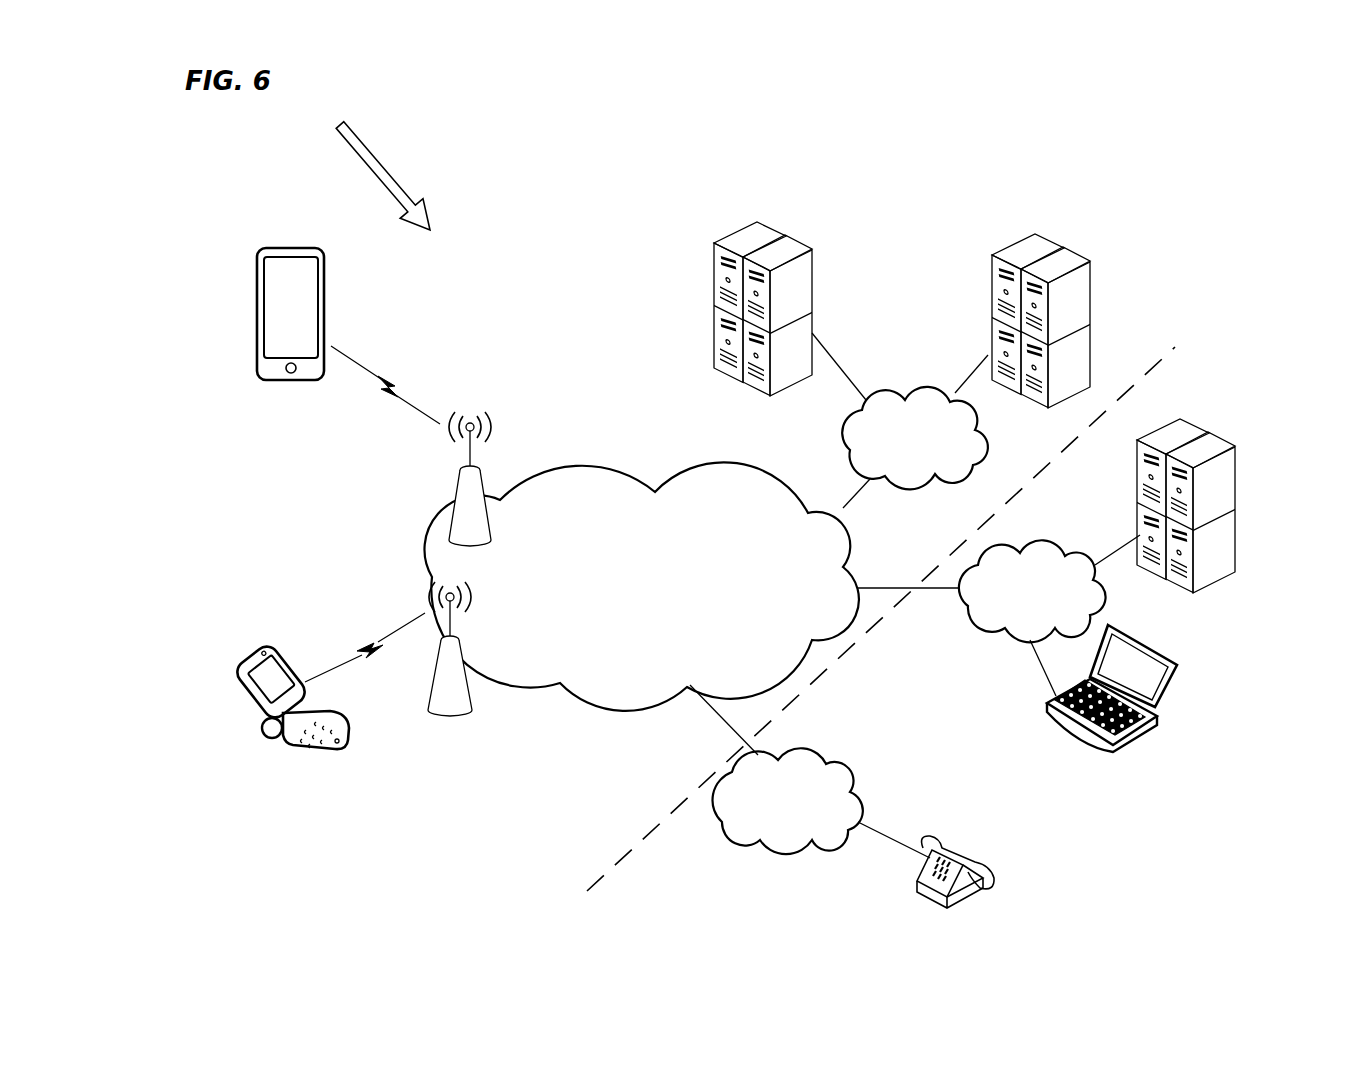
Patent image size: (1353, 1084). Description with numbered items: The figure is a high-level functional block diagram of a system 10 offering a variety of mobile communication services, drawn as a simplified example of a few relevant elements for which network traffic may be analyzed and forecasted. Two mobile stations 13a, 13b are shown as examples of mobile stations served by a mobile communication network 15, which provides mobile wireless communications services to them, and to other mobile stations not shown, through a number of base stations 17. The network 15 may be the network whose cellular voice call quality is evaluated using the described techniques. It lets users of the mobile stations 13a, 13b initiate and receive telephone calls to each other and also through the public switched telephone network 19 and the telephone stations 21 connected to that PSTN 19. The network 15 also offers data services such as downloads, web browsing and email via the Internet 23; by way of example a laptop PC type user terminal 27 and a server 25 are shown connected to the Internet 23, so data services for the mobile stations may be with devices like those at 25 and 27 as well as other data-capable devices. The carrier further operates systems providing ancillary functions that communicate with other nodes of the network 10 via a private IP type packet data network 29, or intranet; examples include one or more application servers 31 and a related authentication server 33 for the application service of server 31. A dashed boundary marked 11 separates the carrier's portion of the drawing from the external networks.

The system 10 is at (371, 168).
The carrier network boundary 11 is at (881, 619).
The mobile station 13a is at (240, 682).
The mobile station 13b is at (257, 293).
The mobile communication network 15 is at (541, 468).
The base station 17 is at (452, 498).
The public switched telephone network (PSTN) 19 is at (860, 790).
The telephone station 21 is at (918, 886).
The Internet 23 is at (977, 632).
The server 25 is at (1137, 506).
The laptop PC type user terminal 27 is at (1076, 737).
The private IP type packet data network 29 is at (986, 453).
The application server 31 is at (812, 263).
The authentication server 33 is at (1090, 319).